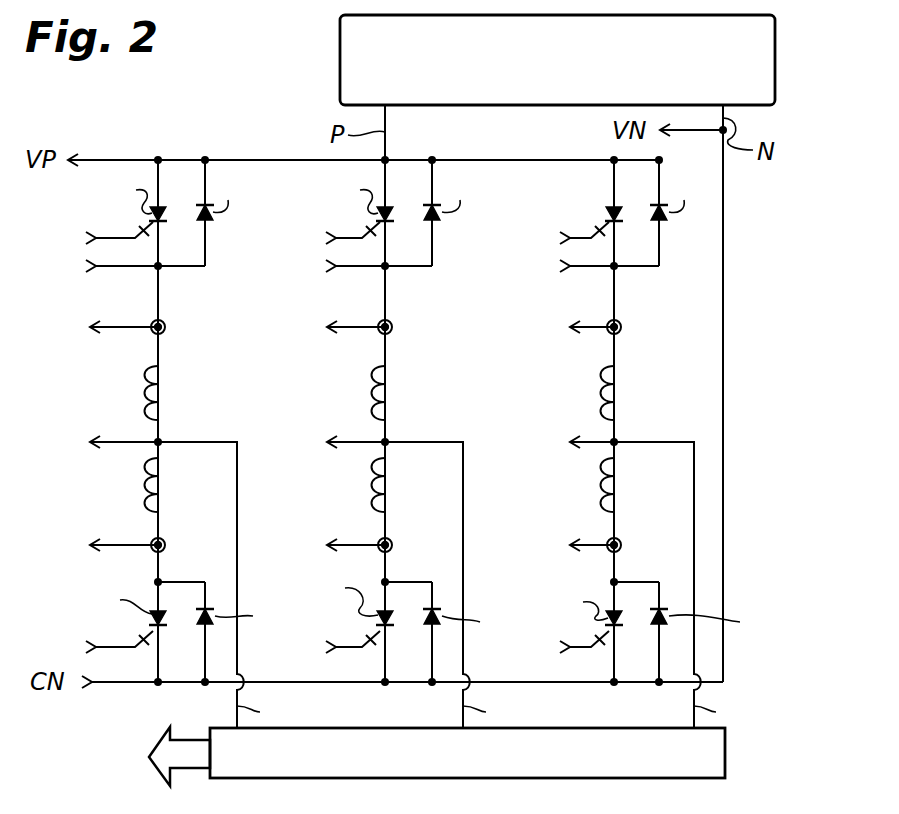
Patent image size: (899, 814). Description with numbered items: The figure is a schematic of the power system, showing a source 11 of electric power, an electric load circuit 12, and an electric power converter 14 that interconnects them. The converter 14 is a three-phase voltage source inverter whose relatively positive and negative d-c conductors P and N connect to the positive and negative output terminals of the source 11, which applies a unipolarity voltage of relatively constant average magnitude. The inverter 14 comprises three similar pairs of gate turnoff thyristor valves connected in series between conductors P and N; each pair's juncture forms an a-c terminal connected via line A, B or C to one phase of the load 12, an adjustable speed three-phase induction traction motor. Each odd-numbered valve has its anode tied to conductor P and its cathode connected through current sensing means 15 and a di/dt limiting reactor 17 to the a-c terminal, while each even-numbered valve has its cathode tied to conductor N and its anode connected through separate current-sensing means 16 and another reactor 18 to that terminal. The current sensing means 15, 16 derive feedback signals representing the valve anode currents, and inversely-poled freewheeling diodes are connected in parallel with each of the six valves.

The source of electric power 11 is at (340, 55).
The electric load circuit 12 is at (725, 746).
The electric power converter 14 is at (303, 388).
The current sensing means 15 is at (166, 326).
The current-sensing means 16 is at (166, 546).
The di/dt limiting reactor 17 is at (164, 392).
The reactor 18 is at (164, 492).